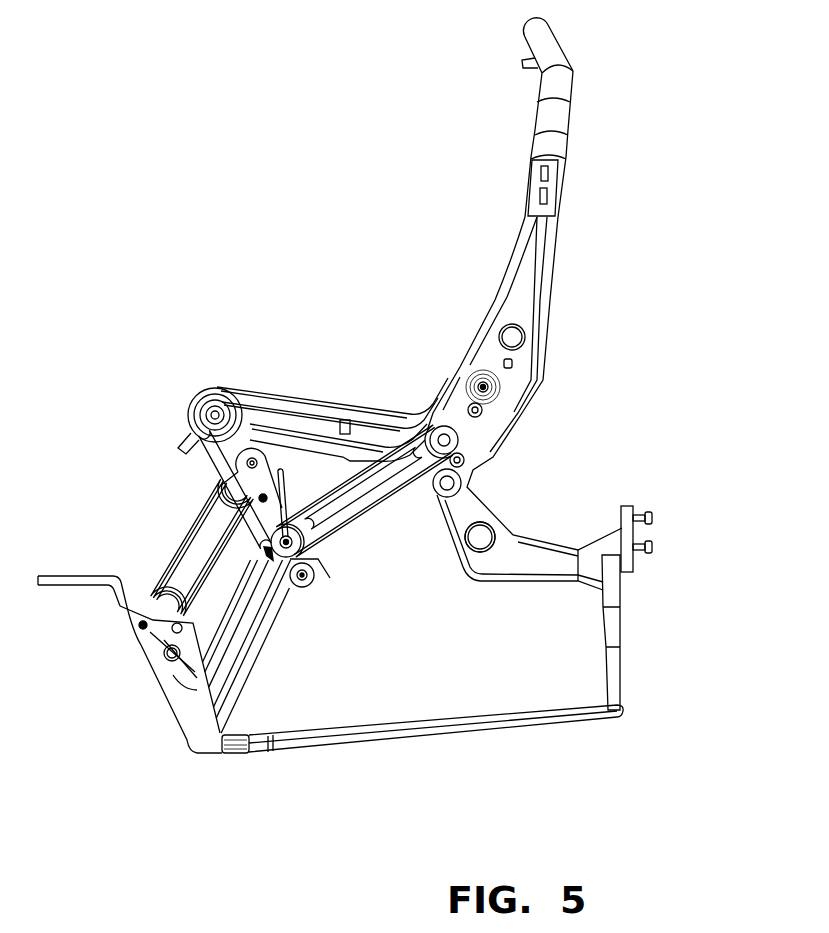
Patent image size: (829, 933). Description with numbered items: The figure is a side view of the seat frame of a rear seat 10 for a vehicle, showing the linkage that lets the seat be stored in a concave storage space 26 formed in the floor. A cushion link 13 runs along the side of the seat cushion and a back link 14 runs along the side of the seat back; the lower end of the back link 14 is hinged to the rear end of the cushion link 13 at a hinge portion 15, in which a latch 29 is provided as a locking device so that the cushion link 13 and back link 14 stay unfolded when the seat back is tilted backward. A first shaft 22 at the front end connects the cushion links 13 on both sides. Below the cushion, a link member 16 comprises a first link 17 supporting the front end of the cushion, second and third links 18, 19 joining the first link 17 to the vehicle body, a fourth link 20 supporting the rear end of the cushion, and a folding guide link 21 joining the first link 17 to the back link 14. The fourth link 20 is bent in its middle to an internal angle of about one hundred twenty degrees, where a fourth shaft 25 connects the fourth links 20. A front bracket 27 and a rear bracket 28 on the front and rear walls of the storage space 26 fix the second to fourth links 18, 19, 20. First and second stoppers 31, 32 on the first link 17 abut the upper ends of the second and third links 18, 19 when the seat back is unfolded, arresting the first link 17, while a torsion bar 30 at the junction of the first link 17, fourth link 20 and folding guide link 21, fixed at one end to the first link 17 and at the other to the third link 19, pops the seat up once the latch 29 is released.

The rear seat 10 is at (335, 228).
The cushion link 13 is at (300, 405).
The back link 14 is at (512, 275).
The hinge portion 15 is at (486, 387).
The link member 16 is at (357, 590).
The first link 17 is at (208, 458).
The second link 18 is at (167, 558).
The third link 19 is at (263, 650).
The fourth link 20 is at (547, 567).
The folding guide link 21 is at (383, 503).
The first shaft 22 is at (214, 400).
The fourth shaft 25 is at (484, 532).
The storage space 26 is at (432, 672).
The front bracket 27 is at (190, 713).
The rear bracket 28 is at (623, 540).
The latch 29 is at (466, 416).
The torsion bar 30 is at (280, 509).
The first stopper 31 is at (262, 497).
The second stopper 32 is at (306, 582).